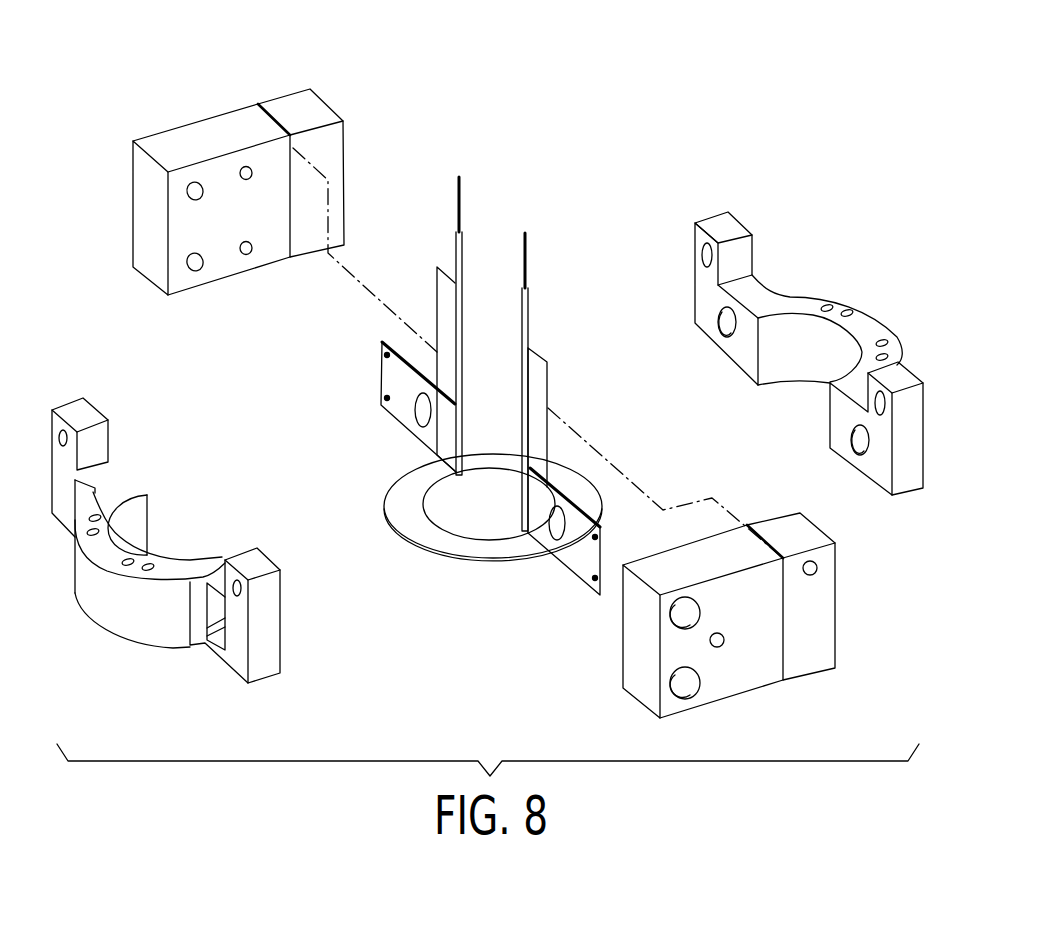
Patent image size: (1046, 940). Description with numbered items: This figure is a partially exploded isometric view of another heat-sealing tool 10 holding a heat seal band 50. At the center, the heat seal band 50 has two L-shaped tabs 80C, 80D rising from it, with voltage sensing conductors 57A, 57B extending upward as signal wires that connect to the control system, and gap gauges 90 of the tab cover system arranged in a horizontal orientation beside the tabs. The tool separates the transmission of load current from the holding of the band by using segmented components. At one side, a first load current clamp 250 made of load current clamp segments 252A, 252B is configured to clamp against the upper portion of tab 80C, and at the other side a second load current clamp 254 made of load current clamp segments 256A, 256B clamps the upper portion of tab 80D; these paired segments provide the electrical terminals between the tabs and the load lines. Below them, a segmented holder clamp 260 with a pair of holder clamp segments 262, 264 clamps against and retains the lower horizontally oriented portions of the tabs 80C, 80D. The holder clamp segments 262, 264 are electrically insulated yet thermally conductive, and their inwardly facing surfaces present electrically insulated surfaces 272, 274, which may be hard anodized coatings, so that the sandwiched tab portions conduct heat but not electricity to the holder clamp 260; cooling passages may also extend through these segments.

The heat-sealing tool 10 is at (762, 115).
The heat seal band 50 is at (332, 367).
The voltage sensing conductor 57A is at (462, 205).
The voltage sensing conductor 57B is at (527, 259).
The tab 80C is at (442, 298).
The tab 80D is at (550, 398).
The gap gauge 90 is at (402, 448).
The first load current clamp 250 is at (252, 177).
The load current clamp segment 252A is at (185, 138).
The load current clamp segment 252B is at (282, 107).
The second load current clamp 254 is at (784, 633).
The load current clamp segment 256A is at (733, 677).
The load current clamp segment 256B is at (817, 653).
The holder clamp 260 is at (817, 371).
The holder clamp segment 262 is at (166, 556).
The holder clamp segment 264 is at (907, 473).
The electrically insulated surface 272 is at (140, 490).
The electrically insulated surface 274 is at (742, 357).